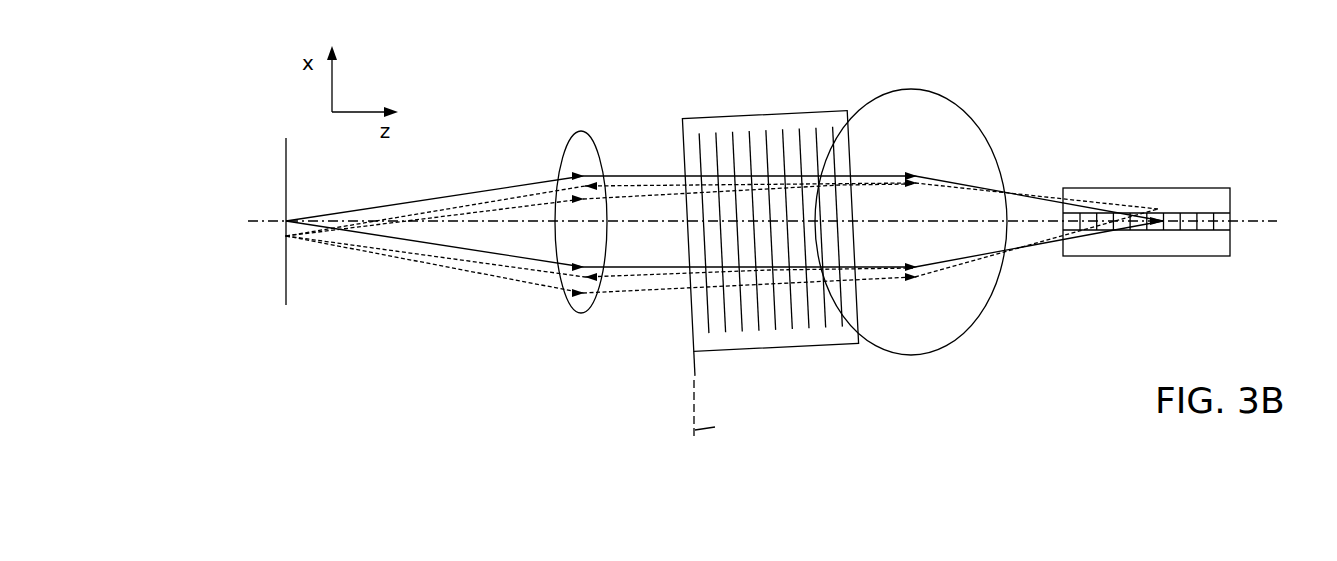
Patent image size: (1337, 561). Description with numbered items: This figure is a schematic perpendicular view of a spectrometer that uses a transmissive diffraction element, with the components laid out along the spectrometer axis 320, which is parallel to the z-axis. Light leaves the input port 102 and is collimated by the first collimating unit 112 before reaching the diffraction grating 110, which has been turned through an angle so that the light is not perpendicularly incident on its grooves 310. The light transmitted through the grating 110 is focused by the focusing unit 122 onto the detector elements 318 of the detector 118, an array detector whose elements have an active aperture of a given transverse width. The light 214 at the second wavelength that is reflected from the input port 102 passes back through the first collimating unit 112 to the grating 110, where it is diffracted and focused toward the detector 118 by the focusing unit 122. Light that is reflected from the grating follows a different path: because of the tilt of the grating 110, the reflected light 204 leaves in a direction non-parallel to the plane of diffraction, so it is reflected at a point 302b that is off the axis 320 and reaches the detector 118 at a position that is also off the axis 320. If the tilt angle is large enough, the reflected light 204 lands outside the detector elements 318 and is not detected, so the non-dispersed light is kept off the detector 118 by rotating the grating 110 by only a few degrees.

The input port 102 is at (280, 214).
The point 302b is at (285, 237).
The light 204 is at (514, 198).
The light 214 is at (492, 212).
The first collimating unit 112 is at (580, 132).
The diffraction grating 110 is at (768, 236).
The grooves 310 is at (748, 136).
The focusing unit 122 is at (907, 88).
The detector 118 is at (1149, 187).
The detector elements 318 is at (1192, 213).
The spectrometer axis 320 is at (1247, 218).